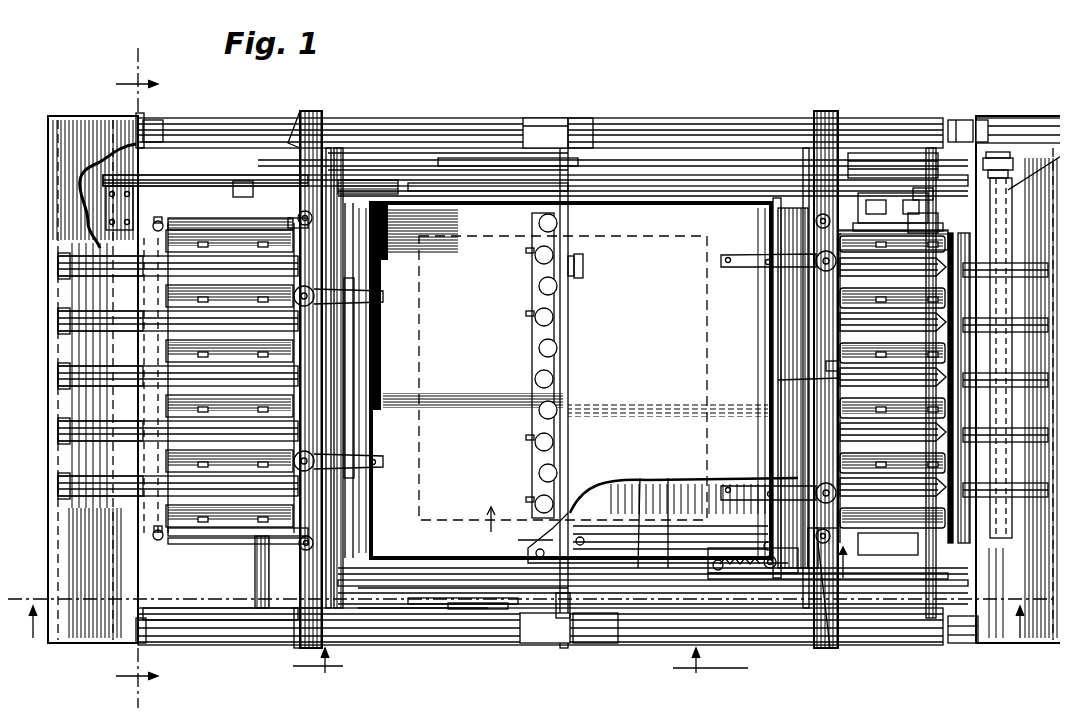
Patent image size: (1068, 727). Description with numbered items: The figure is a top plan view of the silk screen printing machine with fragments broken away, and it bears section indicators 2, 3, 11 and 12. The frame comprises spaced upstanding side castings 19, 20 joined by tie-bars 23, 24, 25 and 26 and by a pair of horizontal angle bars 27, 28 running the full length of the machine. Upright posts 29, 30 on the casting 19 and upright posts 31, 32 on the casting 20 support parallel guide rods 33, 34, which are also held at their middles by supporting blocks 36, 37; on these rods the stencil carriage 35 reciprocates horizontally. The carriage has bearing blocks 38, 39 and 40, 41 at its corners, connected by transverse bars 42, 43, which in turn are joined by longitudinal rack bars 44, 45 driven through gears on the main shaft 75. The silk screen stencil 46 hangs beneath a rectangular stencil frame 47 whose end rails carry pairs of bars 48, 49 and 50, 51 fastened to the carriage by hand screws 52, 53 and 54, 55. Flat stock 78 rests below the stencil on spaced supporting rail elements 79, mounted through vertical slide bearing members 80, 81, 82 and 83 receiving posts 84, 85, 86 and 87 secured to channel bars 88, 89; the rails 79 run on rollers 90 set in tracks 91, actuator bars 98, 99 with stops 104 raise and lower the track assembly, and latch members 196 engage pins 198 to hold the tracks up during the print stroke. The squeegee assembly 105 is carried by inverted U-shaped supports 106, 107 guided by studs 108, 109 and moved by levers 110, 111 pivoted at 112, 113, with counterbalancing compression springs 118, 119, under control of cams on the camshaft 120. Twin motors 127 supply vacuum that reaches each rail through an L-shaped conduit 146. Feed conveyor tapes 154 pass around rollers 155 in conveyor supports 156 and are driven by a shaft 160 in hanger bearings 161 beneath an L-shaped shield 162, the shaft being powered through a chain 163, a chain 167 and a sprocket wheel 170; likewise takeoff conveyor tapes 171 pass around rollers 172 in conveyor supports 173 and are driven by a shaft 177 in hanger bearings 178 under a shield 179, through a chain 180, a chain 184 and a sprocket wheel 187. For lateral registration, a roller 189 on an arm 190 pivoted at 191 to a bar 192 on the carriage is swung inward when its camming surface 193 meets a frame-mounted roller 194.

The section line 2- 2 is at (529, 622).
The section line 3- 3 is at (129, 380).
The section line 11- 11 is at (667, 560).
The section line 12- 12 is at (520, 675).
The side casting 19 is at (438, 620).
The side casting 20 is at (490, 116).
The tie-bar 23 is at (247, 574).
The tie-bar 24 is at (404, 610).
The tie-bar 25 is at (655, 594).
The tie-bar 26 is at (928, 575).
The angle bar 27 is at (183, 600).
The angle bar 28 is at (160, 135).
The upright post 29 is at (125, 632).
The upright post 30 is at (965, 636).
The upright post 31 is at (136, 112).
The upright post 32 is at (960, 116).
The guide rod 33 is at (228, 620).
The guide rod 34 is at (380, 122).
The stencil carriage 35 is at (305, 108).
The supporting block 36 is at (535, 635).
The supporting block 37 is at (535, 118).
The bearing block 38 is at (300, 628).
The bearing block 39 is at (818, 632).
The bearing block 40 is at (288, 119).
The bearing block 41 is at (826, 369).
The transverse bar 42 is at (322, 145).
The transverse bar 43 is at (768, 140).
The rack bar 44 is at (745, 600).
The rack bar 45 is at (688, 168).
The silk screen stencil 46 is at (558, 380).
The stencil frame 47 is at (346, 308).
The bar 48 is at (360, 458).
The bar 49 is at (360, 293).
The bar 50 is at (745, 480).
The bar 51 is at (750, 250).
The hand screw 52 is at (286, 449).
The hand screw 53 is at (286, 284).
The hand screw 54 is at (770, 478).
The hand screw 55 is at (775, 262).
The main shaft 75 is at (515, 532).
The flat stock 78 is at (636, 225).
The supporting rail elements 79 is at (340, 375).
The vertical slide bearing member 80 is at (285, 527).
The vertical slide bearing member 81 is at (808, 527).
The vertical slide bearing member 82 is at (305, 206).
The vertical slide bearing member 83 is at (808, 208).
The post 84 is at (290, 536).
The post 85 is at (804, 588).
The post 86 is at (260, 196).
The post 87 is at (765, 218).
The channel bar 88 is at (300, 225).
The channel bar 89 is at (893, 240).
The rollers 90 is at (250, 283).
The tracks 91 is at (225, 220).
The actuator bar 98 is at (238, 547).
The actuator bar 99 is at (180, 213).
The stops 104 is at (155, 212).
The squeegee assembly 105 is at (524, 291).
The inverted U-shaped support 106 is at (585, 620).
The inverted U-shaped support 107 is at (575, 140).
The stud 108 is at (565, 640).
The stud 109 is at (570, 130).
The lever 110 is at (508, 607).
The lever 111 is at (506, 150).
The pivotal connection 112 is at (462, 600).
The pivotal connection 113 is at (455, 145).
The counterbalancing compression spring 118 is at (395, 607).
The counterbalancing compression spring 119 is at (410, 160).
The camshaft 120 is at (500, 182).
The twin motors 127 is at (885, 190).
The L-shaped conduit 146 is at (770, 372).
The feed conveyor tapes 154 is at (68, 266).
The rollers 155 is at (68, 321).
The conveyor supports 156 is at (150, 322).
The transverse driving shaft 160 is at (72, 155).
The hanger bearings 161 is at (98, 196).
The L-shaped shield 162 is at (55, 218).
The chain 163 is at (462, 190).
The chain 167 is at (205, 167).
The sprocket wheel 170 is at (95, 174).
The takeoff conveyor tapes 171 is at (1030, 455).
The rollers 172 is at (965, 256).
The conveyor supports 173 is at (975, 325).
The transverse driving shaft 177 is at (1000, 128).
The hanger bearings 178 is at (982, 204).
The L-shaped shield 179 is at (1018, 379).
The chain 180 is at (640, 170).
The chain 184 is at (845, 145).
The sprocket wheel 187 is at (990, 150).
The roller 189 is at (580, 497).
The arm 190 is at (669, 519).
The pivot 191 is at (760, 562).
The bar 192 is at (722, 570).
The camming surface 193 is at (639, 514).
The roller 194 is at (513, 530).
The latch members 196 is at (900, 185).
The pins 198 is at (858, 192).